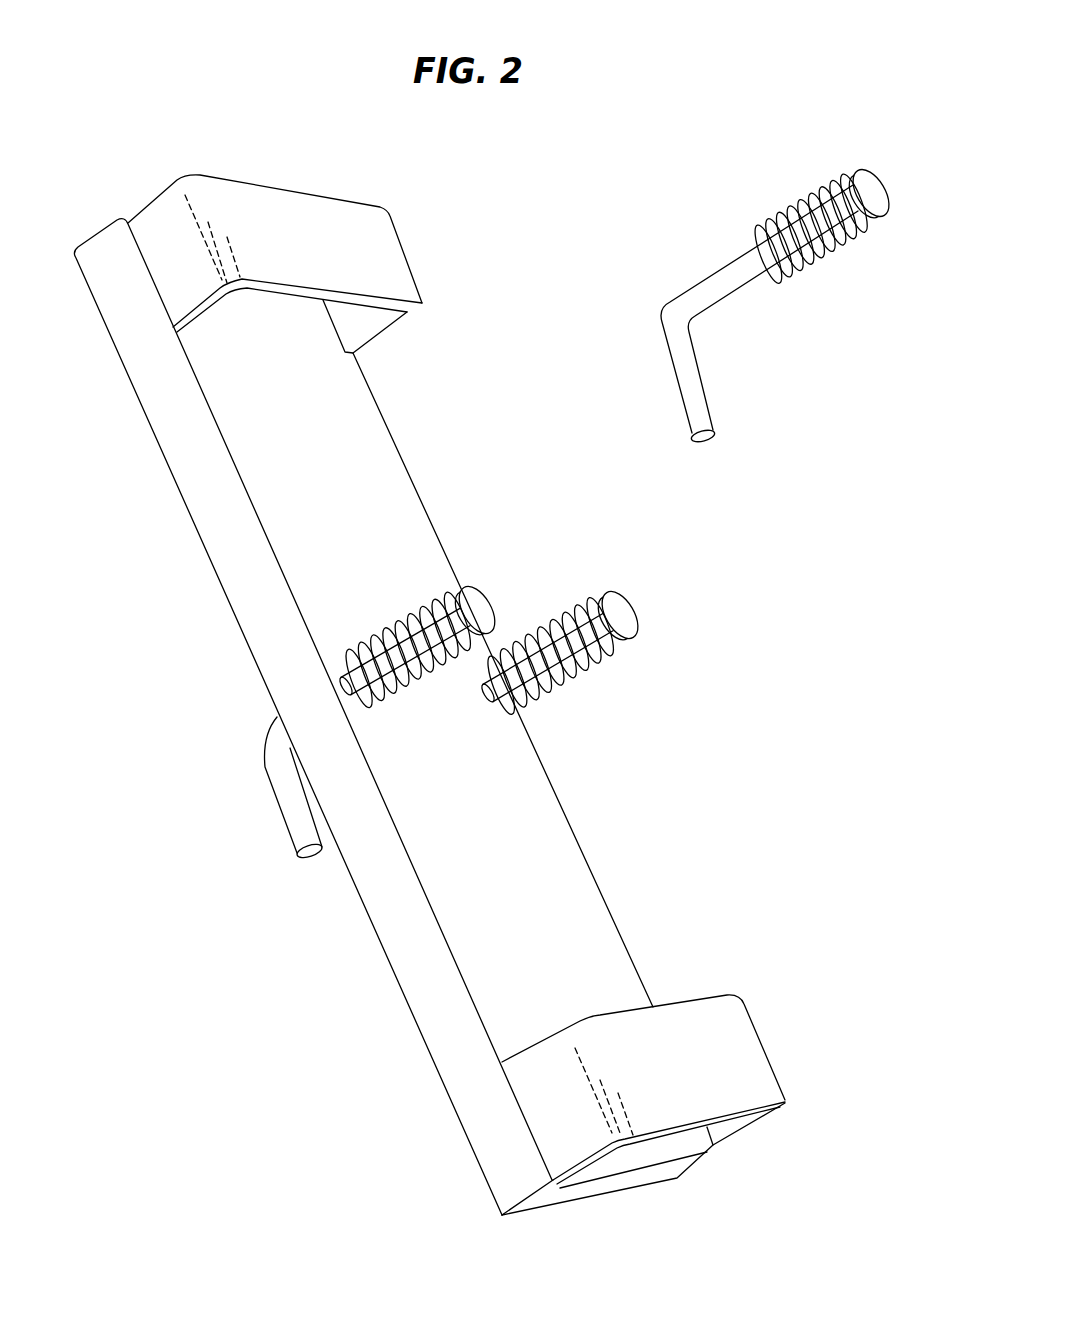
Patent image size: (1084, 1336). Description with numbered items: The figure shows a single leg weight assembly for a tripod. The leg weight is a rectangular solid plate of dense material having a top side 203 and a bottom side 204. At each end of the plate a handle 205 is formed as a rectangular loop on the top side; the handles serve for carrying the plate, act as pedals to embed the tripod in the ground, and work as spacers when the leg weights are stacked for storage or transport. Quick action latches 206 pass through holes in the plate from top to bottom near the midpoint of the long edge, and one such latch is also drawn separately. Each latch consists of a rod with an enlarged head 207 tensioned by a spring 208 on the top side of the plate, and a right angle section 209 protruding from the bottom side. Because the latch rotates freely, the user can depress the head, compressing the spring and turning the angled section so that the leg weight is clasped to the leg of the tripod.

The top side 203 is at (532, 784).
The bottom side 204 is at (175, 503).
The handle 205 is at (380, 250).
The quick action latch 206 is at (698, 253).
The enlarged head 207 is at (623, 600).
The spring 208 is at (597, 680).
The right angle section 209 is at (283, 792).